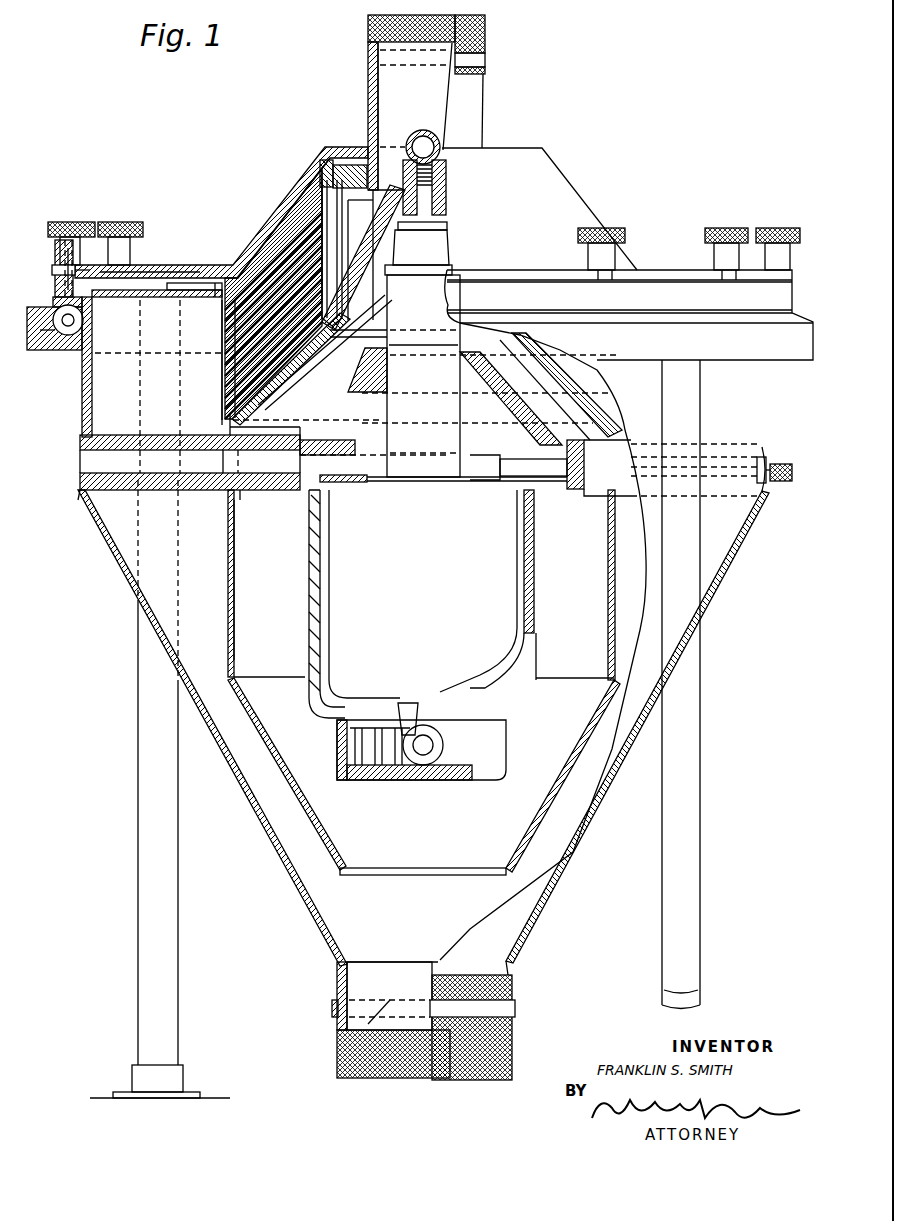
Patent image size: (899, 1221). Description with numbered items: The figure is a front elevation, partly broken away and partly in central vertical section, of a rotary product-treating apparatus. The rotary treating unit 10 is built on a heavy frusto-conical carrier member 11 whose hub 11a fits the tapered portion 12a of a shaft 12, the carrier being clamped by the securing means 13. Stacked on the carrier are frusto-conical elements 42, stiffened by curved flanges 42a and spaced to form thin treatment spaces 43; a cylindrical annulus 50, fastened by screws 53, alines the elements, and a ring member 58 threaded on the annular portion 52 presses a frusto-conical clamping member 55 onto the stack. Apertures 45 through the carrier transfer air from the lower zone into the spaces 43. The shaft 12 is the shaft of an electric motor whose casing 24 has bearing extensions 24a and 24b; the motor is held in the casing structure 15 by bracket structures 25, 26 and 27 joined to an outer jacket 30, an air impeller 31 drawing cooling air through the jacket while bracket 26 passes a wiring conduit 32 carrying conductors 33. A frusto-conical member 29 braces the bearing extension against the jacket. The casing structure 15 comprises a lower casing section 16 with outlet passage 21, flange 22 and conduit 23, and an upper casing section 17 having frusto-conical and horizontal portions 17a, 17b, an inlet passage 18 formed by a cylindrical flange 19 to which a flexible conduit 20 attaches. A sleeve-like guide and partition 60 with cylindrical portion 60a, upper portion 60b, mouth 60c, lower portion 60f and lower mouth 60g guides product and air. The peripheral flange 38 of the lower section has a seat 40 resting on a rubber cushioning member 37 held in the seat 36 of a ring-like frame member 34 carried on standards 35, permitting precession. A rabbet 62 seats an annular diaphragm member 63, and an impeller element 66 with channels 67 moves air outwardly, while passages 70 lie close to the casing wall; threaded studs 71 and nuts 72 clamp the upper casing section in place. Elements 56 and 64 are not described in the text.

The rotary product-treating unit 10 is at (275, 250).
The plate-like carrier member 11 is at (338, 350).
The hub 11a is at (448, 228).
The shaft 12 is at (452, 271).
The tapered portion of shaft 12a is at (449, 249).
The securing means 13 is at (419, 135).
The casing structure 15 is at (118, 603).
The lower casing section 16 is at (262, 828).
The upper casing section 17 is at (195, 252).
The frusto-conical portion of upper casing section 17a is at (252, 245).
The horizontal portion of upper casing section 17b is at (172, 262).
The inlet passage 18 is at (387, 78).
The cylindrical flange 19 is at (372, 98).
The tubular conduit 20 is at (487, 29).
The outlet passage 21 is at (389, 996).
The outlet flange 22 is at (336, 976).
The discharge conduit 23 is at (340, 1050).
The motor casing 24 is at (423, 594).
The lower bearing extension 24a is at (408, 703).
The upper bearing extension 24b is at (484, 376).
The bracket structure 25 is at (288, 485).
The bracket structure 26 is at (576, 496).
The lower bracket structure 27 is at (440, 738).
The frusto-conical member 29 is at (502, 400).
The outer jacket 30 is at (536, 571).
The air impeller 31 is at (360, 727).
The wiring conduit 32 is at (505, 479).
The motor circuit conductors 33 is at (784, 486).
The ring-like frame member 34 is at (80, 350).
The standards 35 is at (145, 1028).
The concave seat 36 is at (82, 337).
The cushioning member 37 is at (66, 336).
The peripheral flange 38 is at (60, 283).
The concave peripheral seat 40 is at (70, 300).
The frusto-conical elements 42 is at (224, 390).
The curved flange 42a is at (160, 386).
The treatment spaces 43 is at (224, 368).
The apertures 45 is at (362, 338).
The cylindrical annulus 50 is at (343, 252).
The threaded annular portion 52 is at (365, 195).
The screws 53 is at (392, 316).
The frusto-conical clamping member 55 is at (292, 215).
The bracket 56 is at (350, 200).
The ring member 58 is at (320, 170).
The guide and partition sleeve 60 is at (220, 584).
The intermediate cylindrical portion 60a is at (236, 571).
The upper frusto-conical portion 60b is at (313, 390).
The upper mouth 60c is at (345, 355).
The lower frusto-conical portion 60f is at (256, 722).
The lower mouth 60g is at (366, 871).
The rabbet 62 is at (55, 347).
The annular diaphragm member 63 is at (175, 299).
The spacer 64 is at (320, 150).
The air impeller element 66 is at (165, 291).
The channels 67 is at (215, 298).
The passages 70 is at (95, 299).
The threaded studs 71 is at (78, 254).
The nuts 72 is at (115, 222).